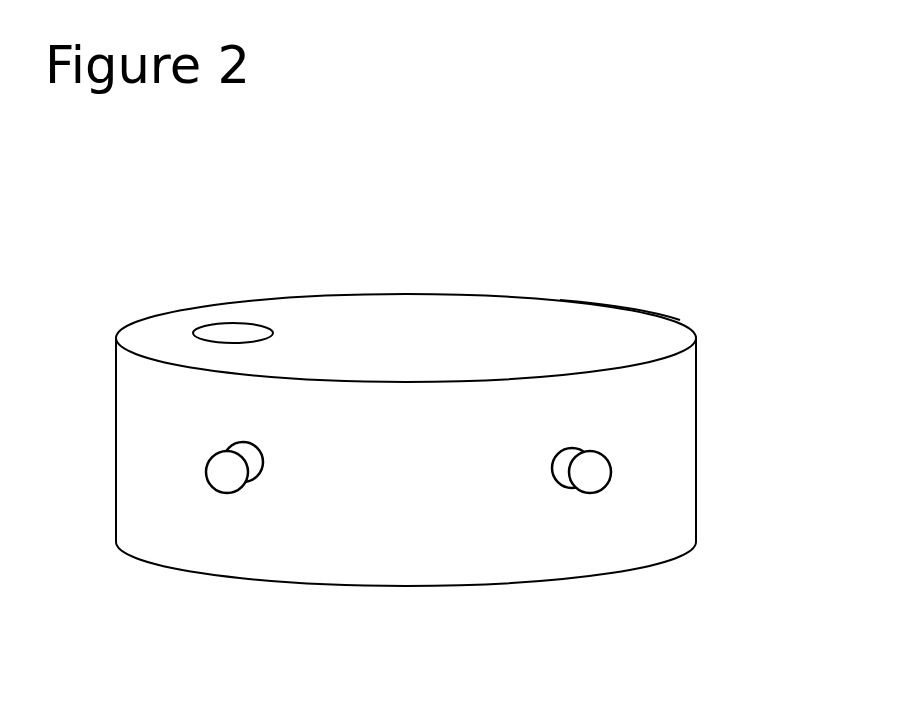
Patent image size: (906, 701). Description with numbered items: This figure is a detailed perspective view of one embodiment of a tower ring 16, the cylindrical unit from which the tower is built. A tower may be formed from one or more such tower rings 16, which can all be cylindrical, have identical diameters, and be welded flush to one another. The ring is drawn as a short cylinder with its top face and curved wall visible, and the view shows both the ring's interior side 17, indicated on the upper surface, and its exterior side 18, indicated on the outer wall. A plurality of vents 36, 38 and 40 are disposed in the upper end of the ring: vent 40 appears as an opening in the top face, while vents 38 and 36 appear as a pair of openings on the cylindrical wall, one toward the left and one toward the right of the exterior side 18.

The tower ring 16 is at (116, 424).
The interior side 17 is at (651, 331).
The exterior side 18 is at (673, 510).
The vent 36 is at (592, 493).
The vent 38 is at (226, 493).
The vent 40 is at (262, 325).